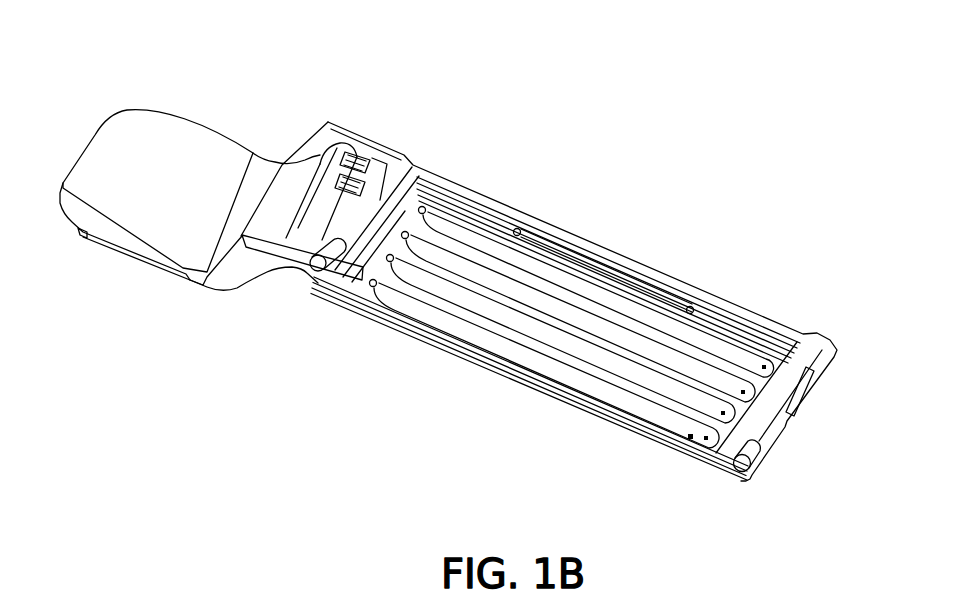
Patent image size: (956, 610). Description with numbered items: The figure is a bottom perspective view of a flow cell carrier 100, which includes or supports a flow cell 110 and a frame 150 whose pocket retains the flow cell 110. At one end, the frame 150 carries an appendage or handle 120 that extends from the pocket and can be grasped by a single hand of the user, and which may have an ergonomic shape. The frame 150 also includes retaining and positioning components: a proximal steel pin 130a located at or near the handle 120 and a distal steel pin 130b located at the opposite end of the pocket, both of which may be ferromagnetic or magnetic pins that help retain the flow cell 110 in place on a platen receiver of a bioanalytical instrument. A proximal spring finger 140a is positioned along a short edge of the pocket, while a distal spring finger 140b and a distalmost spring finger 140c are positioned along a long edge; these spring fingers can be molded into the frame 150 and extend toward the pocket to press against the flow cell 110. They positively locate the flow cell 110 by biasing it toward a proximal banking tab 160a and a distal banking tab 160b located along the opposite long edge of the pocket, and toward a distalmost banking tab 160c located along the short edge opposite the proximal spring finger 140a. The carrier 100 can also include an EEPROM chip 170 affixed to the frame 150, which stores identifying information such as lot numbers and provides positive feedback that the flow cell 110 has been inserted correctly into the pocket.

The flow cell carrier 100 is at (637, 44).
The flow cell 110 is at (707, 373).
The handle 120 is at (106, 150).
The proximal steel pin 130a is at (310, 280).
The distal steel pin 130b is at (787, 422).
The proximal spring finger 140a is at (428, 210).
The distal spring finger 140b is at (530, 232).
The distalmost spring finger 140c is at (688, 306).
The frame 150 is at (404, 148).
The proximal banking tab 160a is at (375, 290).
The distal banking tab 160b is at (695, 444).
The distalmost banking tab 160c is at (727, 412).
The EEPROM chip 170 is at (330, 120).